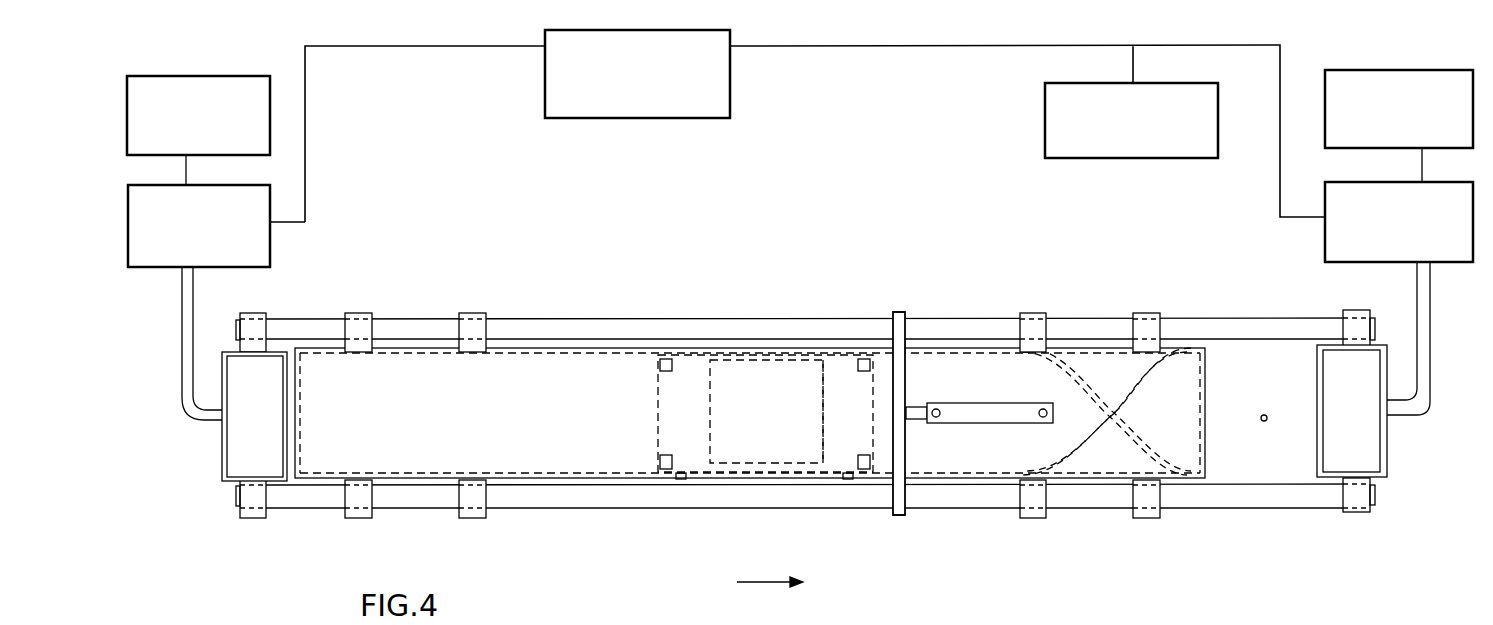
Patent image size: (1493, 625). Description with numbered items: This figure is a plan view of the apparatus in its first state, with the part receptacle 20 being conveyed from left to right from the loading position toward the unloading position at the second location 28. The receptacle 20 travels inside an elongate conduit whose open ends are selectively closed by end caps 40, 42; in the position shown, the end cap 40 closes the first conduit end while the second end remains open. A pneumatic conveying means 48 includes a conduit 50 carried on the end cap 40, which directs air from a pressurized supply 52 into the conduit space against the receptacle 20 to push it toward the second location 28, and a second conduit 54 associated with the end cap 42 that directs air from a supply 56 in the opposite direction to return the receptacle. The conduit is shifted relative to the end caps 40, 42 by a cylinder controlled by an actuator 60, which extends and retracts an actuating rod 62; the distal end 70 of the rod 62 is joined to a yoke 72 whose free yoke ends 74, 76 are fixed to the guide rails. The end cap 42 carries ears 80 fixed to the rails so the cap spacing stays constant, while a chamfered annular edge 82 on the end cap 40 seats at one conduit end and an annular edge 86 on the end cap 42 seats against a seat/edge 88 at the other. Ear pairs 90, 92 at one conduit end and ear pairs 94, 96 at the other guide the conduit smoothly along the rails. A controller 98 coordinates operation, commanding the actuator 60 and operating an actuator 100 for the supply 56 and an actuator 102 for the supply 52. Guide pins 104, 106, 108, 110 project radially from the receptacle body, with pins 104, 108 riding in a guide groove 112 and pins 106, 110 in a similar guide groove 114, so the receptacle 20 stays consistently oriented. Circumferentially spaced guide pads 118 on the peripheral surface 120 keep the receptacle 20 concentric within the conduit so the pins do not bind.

The part receptacle 20 is at (700, 400).
The second location 28 is at (1267, 421).
The end cap 40 is at (222, 352).
The end cap 42 is at (1367, 411).
The pneumatic conveying means 48 is at (170, 422).
The conduit 50 is at (198, 425).
The pressurized supply 52 is at (210, 138).
The second conduit 54 is at (1415, 412).
The supply 56 is at (1412, 132).
The actuator 60 is at (1146, 144).
The actuating rod 62 is at (917, 407).
The distal end 70 is at (908, 400).
The yoke 72 is at (897, 378).
The free yoke end 74 is at (900, 312).
The free yoke end 76 is at (903, 514).
The mounting ears 80 is at (1354, 312).
The chamfered annular edge 82 is at (291, 352).
The annular edge 86 is at (1317, 370).
The seat/edge 88 is at (1205, 385).
The ear pair 90 is at (356, 313).
The ear pair 92 is at (475, 313).
The ear pair 94 is at (1033, 313).
The ear pair 96 is at (1148, 313).
The controller 98 is at (652, 97).
The actuator 100 is at (1415, 245).
The actuator 102 is at (216, 249).
The guide pin 104 is at (683, 480).
The guide pin 106 is at (710, 355).
The guide pin 108 is at (850, 480).
The guide pin 110 is at (843, 375).
The guide groove 112 is at (562, 475).
The guide groove 114 is at (590, 351).
The guide pads 118 is at (628, 348).
The peripheral surface 120 is at (828, 375).